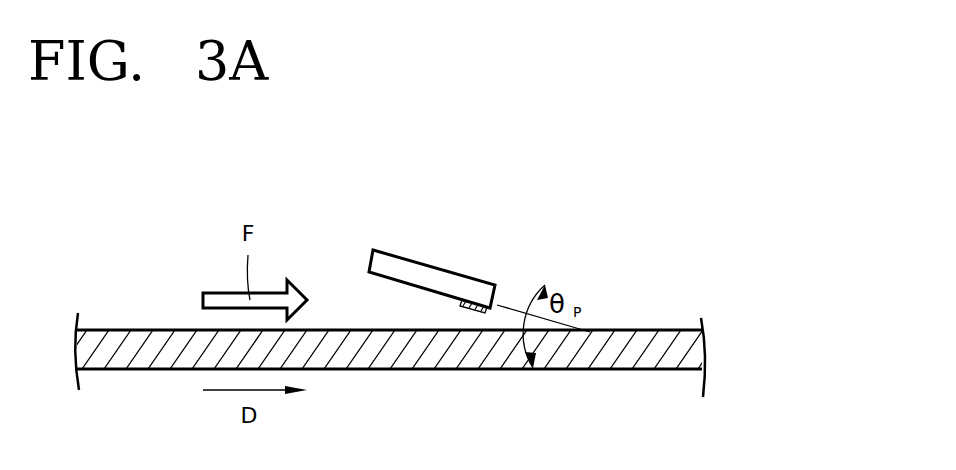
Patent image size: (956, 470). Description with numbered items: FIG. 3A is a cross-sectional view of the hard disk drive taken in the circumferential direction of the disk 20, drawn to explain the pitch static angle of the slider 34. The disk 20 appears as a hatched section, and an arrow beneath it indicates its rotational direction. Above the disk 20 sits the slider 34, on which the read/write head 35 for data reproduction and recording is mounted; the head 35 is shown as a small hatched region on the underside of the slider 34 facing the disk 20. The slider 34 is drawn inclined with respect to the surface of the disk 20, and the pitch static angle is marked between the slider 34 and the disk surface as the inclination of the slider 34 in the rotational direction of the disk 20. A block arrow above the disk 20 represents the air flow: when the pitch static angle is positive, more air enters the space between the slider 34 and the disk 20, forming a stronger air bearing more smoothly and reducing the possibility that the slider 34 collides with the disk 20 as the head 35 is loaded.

The disk 20 is at (372, 350).
The slider 34 is at (430, 275).
The read/write head 35 is at (473, 313).